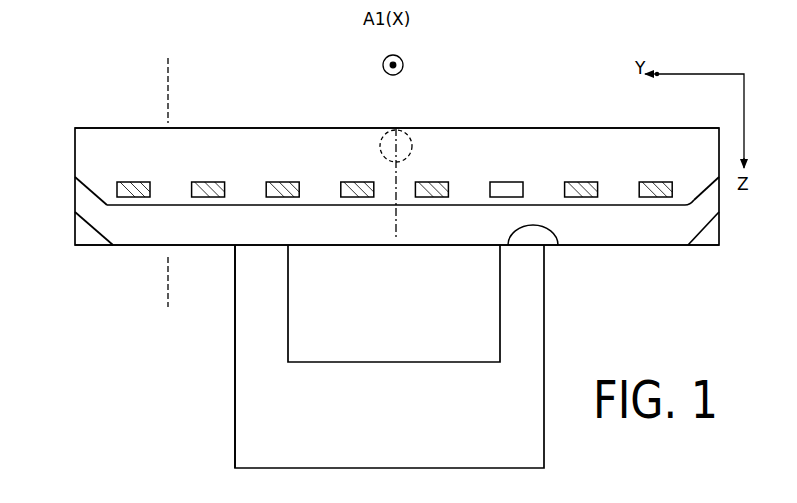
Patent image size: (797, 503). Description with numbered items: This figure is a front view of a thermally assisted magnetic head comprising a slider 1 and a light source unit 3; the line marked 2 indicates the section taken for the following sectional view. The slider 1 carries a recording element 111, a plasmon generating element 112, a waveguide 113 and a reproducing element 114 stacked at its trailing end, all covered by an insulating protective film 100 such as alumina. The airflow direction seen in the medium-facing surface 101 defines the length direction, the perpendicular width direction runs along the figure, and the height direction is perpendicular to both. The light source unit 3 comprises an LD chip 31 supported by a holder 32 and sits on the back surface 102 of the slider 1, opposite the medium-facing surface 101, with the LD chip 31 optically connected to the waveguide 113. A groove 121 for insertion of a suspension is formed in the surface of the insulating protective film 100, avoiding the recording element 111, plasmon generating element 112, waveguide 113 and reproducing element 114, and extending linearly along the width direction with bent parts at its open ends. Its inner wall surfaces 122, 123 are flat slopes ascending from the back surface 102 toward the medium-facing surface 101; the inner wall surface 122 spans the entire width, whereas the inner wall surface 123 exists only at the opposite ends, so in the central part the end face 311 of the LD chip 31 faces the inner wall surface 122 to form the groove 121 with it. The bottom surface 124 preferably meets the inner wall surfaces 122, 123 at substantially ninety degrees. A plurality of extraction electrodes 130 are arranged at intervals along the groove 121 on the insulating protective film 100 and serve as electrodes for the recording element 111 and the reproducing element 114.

The slider 1 is at (223, 128).
The section line for FIG. 2 is at (167, 86).
The light source unit 3 is at (222, 432).
The laser diode chip 31 is at (293, 325).
The holder 32 is at (265, 382).
The end face of the LD chip 311 is at (558, 245).
The insulating protective film 100 is at (97, 142).
The medium-facing surface 101 is at (553, 128).
The back surface 102 is at (602, 245).
The recording element 111 is at (385, 128).
The plasmon generating element 112 is at (396, 146).
The waveguide 113 is at (400, 182).
The reproducing element 114 is at (396, 146).
The groove 121 is at (656, 225).
The inner wall surface 122 is at (80, 188).
The inner wall surface 123 is at (702, 231).
The bottom surface 124 is at (123, 230).
The extraction electrodes 130 is at (510, 182).